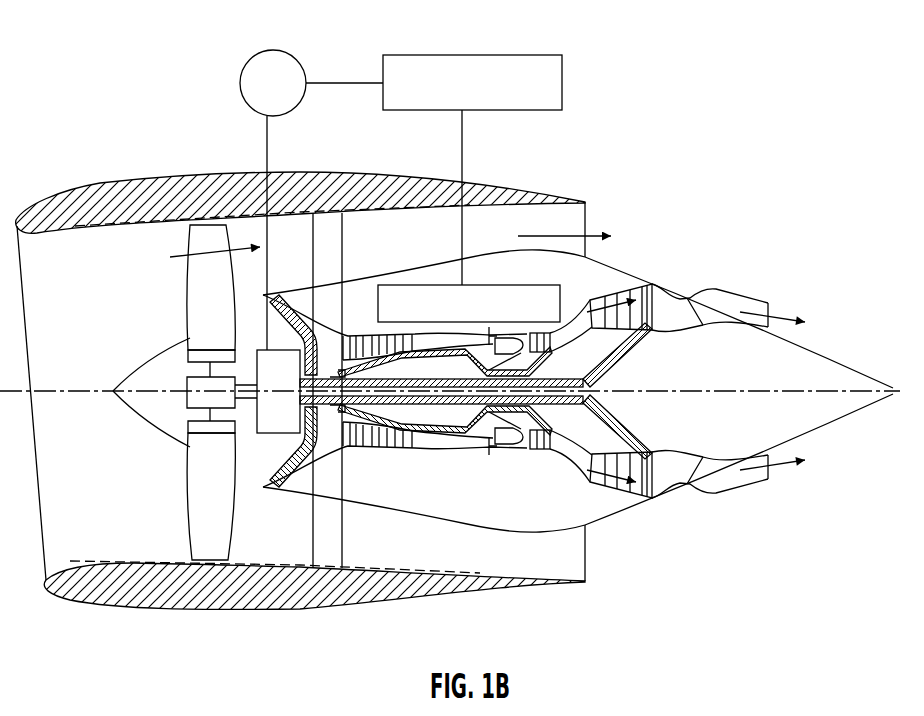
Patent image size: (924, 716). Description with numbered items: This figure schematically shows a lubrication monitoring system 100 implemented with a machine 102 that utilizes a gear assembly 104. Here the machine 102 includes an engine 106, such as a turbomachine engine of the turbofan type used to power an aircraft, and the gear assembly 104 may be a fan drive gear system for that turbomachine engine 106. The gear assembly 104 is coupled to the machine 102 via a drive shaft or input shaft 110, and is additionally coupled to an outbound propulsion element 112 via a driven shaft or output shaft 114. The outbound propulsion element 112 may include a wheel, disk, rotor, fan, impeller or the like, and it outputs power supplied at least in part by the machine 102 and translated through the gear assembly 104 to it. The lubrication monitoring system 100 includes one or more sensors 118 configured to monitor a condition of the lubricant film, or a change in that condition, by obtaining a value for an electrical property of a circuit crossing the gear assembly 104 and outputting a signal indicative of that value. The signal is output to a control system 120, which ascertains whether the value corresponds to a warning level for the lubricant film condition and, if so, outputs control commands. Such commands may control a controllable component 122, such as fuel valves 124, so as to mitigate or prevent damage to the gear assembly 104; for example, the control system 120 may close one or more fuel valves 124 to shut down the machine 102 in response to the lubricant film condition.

The lubrication monitoring system 100 is at (450, 307).
The machine 102 is at (454, 372).
The gear assembly 104 is at (278, 391).
The engine 106 is at (534, 391).
The input shaft 110 is at (441, 438).
The outbound propulsion element 112 is at (154, 392).
The output shaft 114 is at (249, 355).
The sensor 118 is at (311, 200).
The control system 120 is at (472, 147).
The controllable component 122 is at (469, 287).
The fuel valves 124 is at (469, 303).